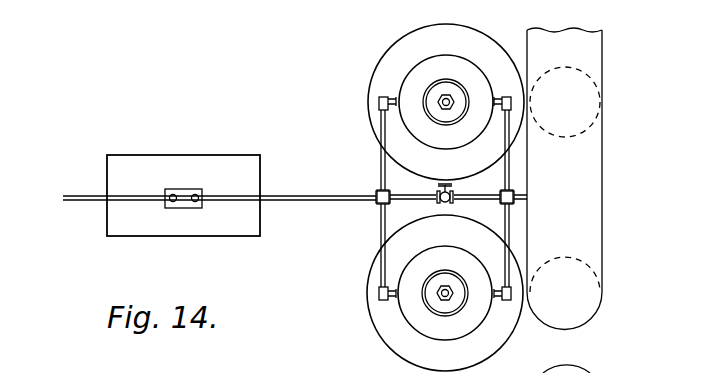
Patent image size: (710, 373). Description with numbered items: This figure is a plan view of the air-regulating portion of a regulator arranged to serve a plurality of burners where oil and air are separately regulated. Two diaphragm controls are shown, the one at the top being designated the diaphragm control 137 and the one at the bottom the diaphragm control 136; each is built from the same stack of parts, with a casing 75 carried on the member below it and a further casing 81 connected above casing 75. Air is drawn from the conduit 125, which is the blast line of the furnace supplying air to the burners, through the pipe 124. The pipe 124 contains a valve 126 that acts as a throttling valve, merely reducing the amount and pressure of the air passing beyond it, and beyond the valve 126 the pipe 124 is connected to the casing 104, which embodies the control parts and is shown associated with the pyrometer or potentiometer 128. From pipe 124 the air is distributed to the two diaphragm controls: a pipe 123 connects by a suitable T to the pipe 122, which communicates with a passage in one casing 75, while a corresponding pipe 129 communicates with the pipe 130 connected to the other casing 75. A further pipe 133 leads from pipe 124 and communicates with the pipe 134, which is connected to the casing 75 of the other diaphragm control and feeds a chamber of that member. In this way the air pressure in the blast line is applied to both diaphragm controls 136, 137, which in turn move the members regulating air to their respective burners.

The casing 75 is at (480, 42).
The casing 81 is at (428, 58).
The casing 104 is at (186, 208).
The pipe 122 is at (498, 298).
The pipe 123 is at (510, 222).
The pipe 124 is at (328, 200).
The conduit 125 is at (592, 203).
The valve 126 is at (449, 196).
The pyrometer or potentiometer 128 is at (258, 212).
The pipe 129 is at (509, 164).
The pipe 130 is at (500, 98).
The pipe 133 is at (381, 165).
The pipe 134 is at (392, 98).
The diaphragm control 136 is at (358, 322).
The diaphragm control 137 is at (357, 93).